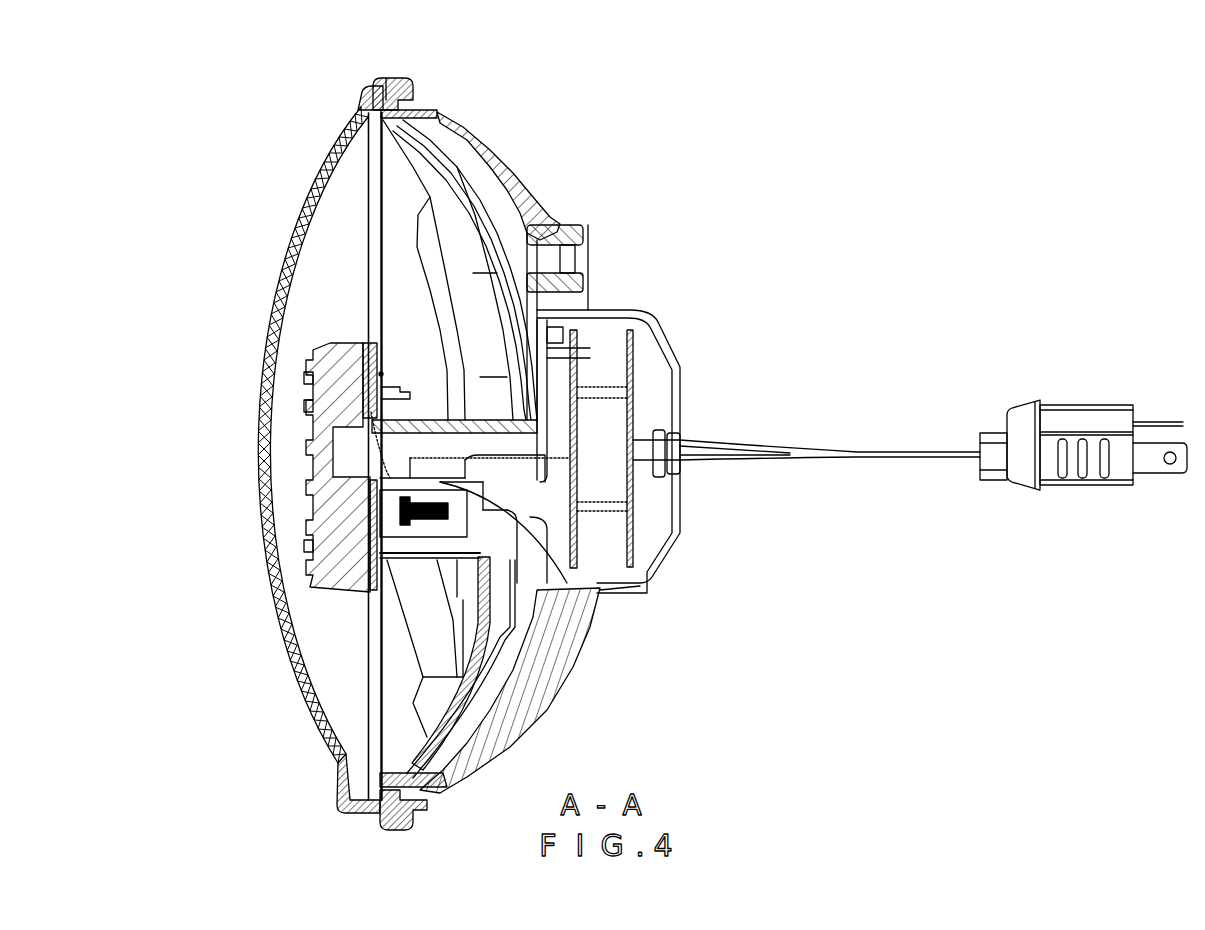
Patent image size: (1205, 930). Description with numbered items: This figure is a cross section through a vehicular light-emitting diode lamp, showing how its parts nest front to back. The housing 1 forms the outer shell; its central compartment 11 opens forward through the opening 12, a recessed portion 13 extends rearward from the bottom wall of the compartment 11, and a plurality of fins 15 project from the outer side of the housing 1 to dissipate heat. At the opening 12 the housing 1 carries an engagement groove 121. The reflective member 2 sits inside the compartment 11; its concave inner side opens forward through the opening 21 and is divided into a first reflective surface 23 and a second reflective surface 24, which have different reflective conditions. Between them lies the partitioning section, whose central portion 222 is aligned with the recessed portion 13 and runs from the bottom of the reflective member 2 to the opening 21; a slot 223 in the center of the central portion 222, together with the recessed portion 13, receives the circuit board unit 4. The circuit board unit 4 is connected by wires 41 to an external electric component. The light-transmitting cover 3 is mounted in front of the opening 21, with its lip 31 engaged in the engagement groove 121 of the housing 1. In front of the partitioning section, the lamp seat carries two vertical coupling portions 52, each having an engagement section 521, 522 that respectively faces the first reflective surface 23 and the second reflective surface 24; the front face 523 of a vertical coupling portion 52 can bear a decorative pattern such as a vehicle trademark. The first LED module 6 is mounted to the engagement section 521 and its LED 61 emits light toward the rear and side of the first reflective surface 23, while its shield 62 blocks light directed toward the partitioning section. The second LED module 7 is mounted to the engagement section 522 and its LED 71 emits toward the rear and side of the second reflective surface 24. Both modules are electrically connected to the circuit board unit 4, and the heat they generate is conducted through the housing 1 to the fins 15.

The housing 1 is at (587, 444).
The compartment 11 is at (483, 186).
The opening 12 is at (390, 160).
The engagement groove 121 is at (407, 110).
The recessed portion 13 is at (617, 374).
The fins 15 is at (548, 633).
The reflective member 2 is at (487, 647).
The opening 21 is at (393, 190).
The central portion 222 is at (462, 420).
The slot 223 is at (485, 440).
The first reflective surface 23 is at (463, 236).
The second reflective surface 24 is at (440, 687).
The cover 3 is at (265, 463).
The lip 31 is at (393, 80).
The circuit board unit 4 is at (433, 468).
The wires 41 is at (855, 443).
The vertical coupling portion 52 is at (254, 467).
The engagement section 521 is at (330, 383).
The engagement section 522 is at (335, 540).
The front face 523 is at (312, 405).
The first LED module 6 is at (370, 365).
The LED 61 is at (385, 392).
The shield 62 is at (381, 374).
The second LED module 7 is at (378, 545).
The LED 71 is at (378, 575).